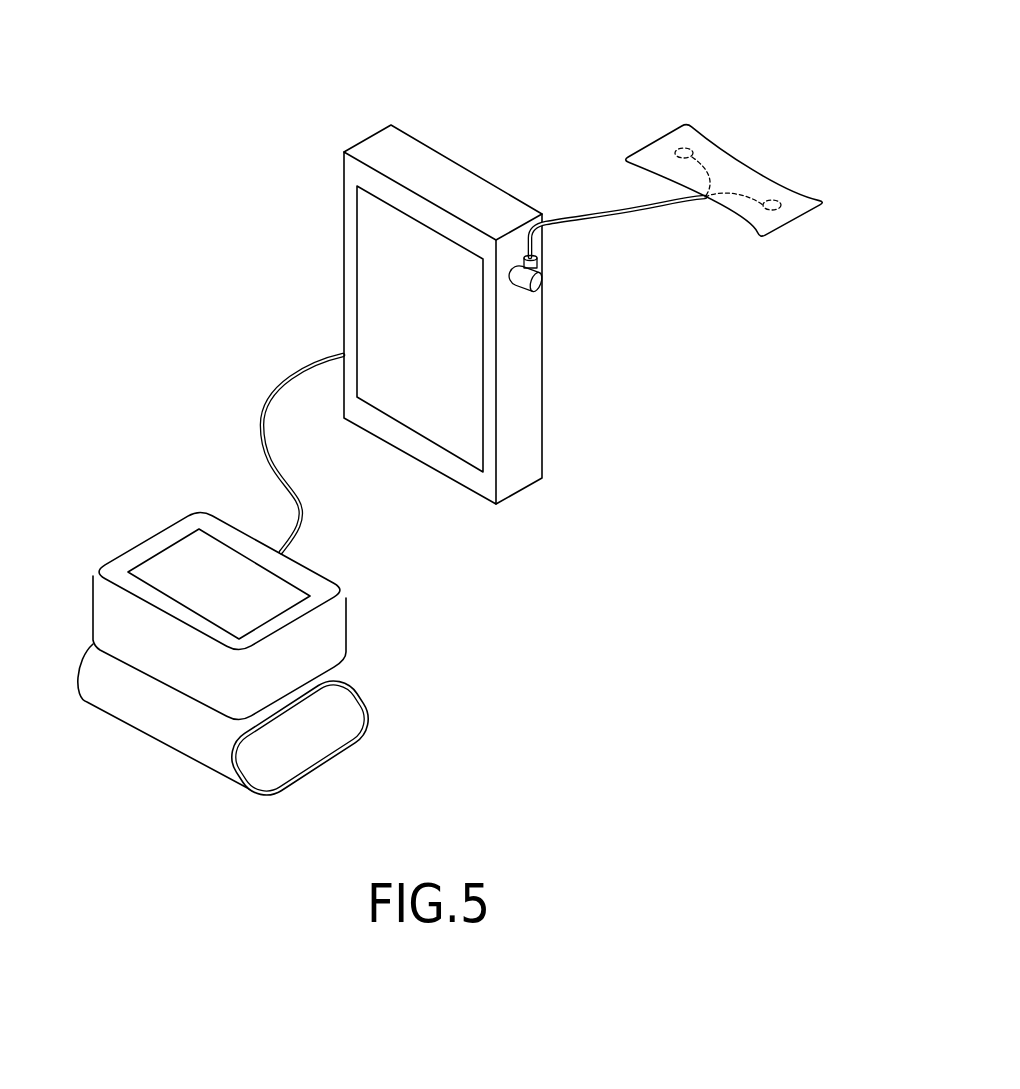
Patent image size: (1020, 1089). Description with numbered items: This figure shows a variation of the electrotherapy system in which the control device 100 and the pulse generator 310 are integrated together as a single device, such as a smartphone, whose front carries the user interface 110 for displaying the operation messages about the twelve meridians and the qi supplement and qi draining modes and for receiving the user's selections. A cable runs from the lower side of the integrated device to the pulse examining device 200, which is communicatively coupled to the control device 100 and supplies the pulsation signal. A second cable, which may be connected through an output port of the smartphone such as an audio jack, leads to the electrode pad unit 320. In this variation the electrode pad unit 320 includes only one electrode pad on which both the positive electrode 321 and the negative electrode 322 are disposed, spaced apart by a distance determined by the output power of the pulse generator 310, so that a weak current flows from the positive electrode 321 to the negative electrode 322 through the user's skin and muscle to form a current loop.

The control device 100 is at (394, 264).
The pulse generator 310 is at (394, 264).
The user interface 110 is at (357, 262).
The pulse examining device 200 is at (397, 682).
The electrode pad unit 320 is at (724, 184).
The positive electrode 321 is at (680, 148).
The negative electrode 322 is at (774, 211).